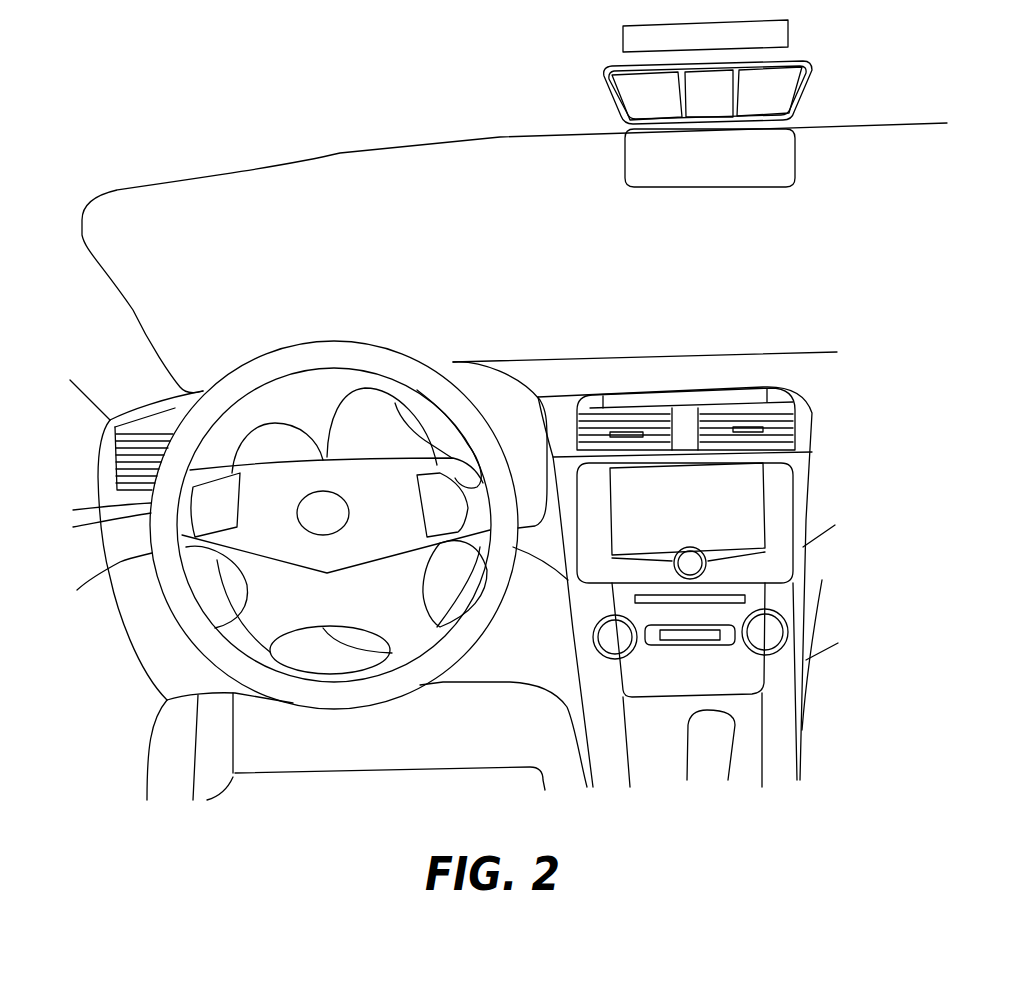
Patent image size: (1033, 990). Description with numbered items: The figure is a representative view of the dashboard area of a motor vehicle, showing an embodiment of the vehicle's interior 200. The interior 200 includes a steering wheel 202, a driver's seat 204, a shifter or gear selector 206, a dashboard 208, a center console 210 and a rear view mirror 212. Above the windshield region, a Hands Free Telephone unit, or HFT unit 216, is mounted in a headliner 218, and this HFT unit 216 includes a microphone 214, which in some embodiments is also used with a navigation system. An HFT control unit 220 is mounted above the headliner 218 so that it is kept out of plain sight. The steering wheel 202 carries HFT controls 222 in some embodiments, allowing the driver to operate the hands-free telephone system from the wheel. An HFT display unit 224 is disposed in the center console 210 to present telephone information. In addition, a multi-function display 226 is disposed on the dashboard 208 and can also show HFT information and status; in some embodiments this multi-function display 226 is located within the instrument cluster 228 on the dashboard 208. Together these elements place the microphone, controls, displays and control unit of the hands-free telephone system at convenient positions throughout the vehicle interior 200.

The interior 200 is at (103, 171).
The steering wheel 202 is at (295, 358).
The driver's seat 204 is at (447, 741).
The shifter or gear selector 206 is at (707, 752).
The dashboard 208 is at (485, 388).
The center console 210 is at (803, 480).
The rear view mirror 212 is at (778, 187).
The microphone 214 is at (637, 85).
The Hands Free Telephone (HFT) unit 216 is at (803, 93).
The headliner 218 is at (315, 108).
The HFT control unit 220 is at (623, 37).
The HFT controls 222 is at (233, 580).
The HFT display unit 224 is at (740, 397).
The multi-function display 226 is at (395, 402).
The instrument cluster 228 is at (328, 393).